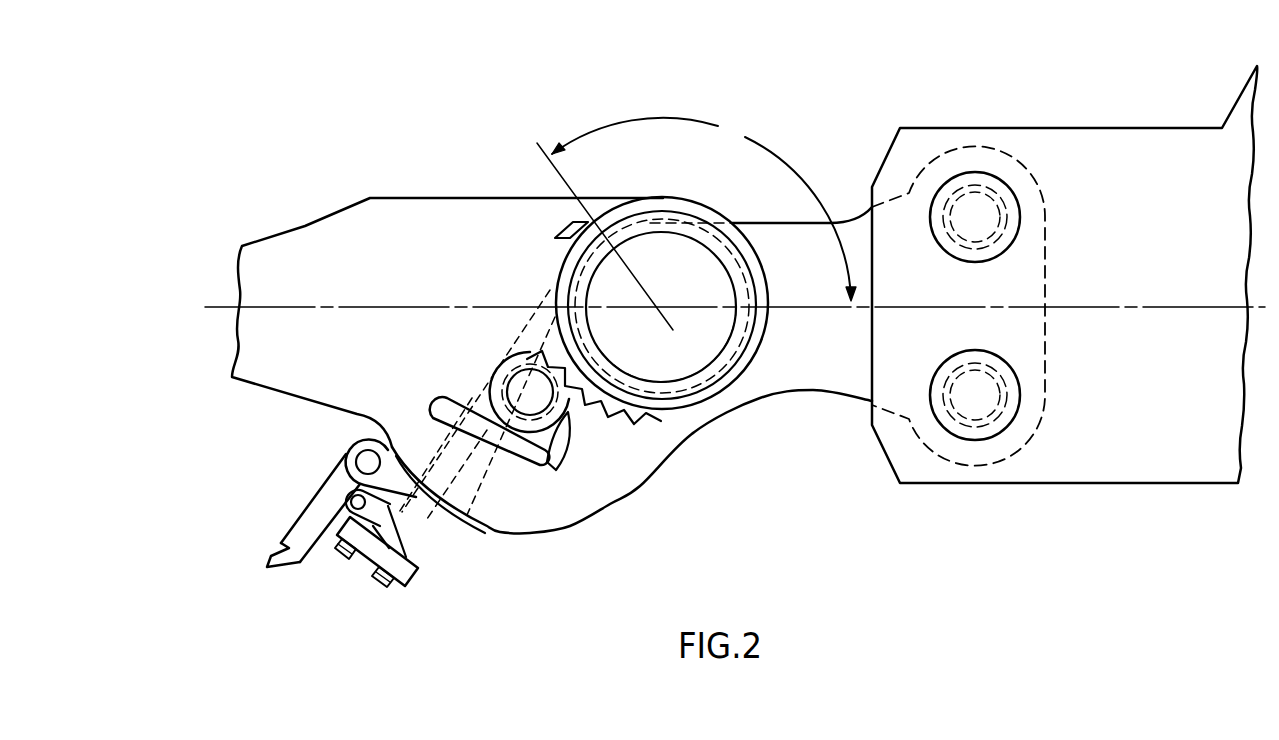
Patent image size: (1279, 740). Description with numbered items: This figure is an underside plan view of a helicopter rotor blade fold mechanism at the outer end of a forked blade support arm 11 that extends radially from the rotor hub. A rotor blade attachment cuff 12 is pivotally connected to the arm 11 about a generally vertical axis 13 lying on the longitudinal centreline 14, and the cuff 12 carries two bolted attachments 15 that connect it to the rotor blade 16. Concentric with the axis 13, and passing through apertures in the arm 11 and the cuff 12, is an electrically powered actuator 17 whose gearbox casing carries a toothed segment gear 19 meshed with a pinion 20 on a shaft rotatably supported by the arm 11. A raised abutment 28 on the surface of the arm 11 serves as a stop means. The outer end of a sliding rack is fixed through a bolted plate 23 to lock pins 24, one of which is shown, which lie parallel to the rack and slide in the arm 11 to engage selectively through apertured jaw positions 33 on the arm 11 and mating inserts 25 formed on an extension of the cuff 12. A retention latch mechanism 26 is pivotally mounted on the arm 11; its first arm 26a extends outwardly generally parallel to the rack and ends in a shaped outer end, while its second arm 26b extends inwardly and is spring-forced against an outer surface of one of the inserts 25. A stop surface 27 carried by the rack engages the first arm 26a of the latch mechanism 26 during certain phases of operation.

The forked blade support 11 is at (306, 237).
The rotor blade attachment cuff 12 is at (782, 383).
The vertical axis 13 is at (658, 307).
The longitudinal centreline 14 is at (852, 303).
The bolted attachments 15 is at (975, 182).
The rotor blade 16 is at (1231, 136).
The electrically powered actuator 17 is at (658, 260).
The toothed segment gear 19 is at (660, 407).
The pinion 20 is at (583, 420).
The bolted plate 23 is at (372, 552).
The lock pin 24 is at (420, 538).
The mating inserts 25 is at (563, 505).
The latch mechanism 26 is at (283, 471).
The first arm 26a is at (280, 548).
The second arm 26b is at (512, 569).
The stop surface 27 is at (351, 502).
The raised abutment 28 is at (573, 222).
The apertured jaw positions 33 is at (490, 528).